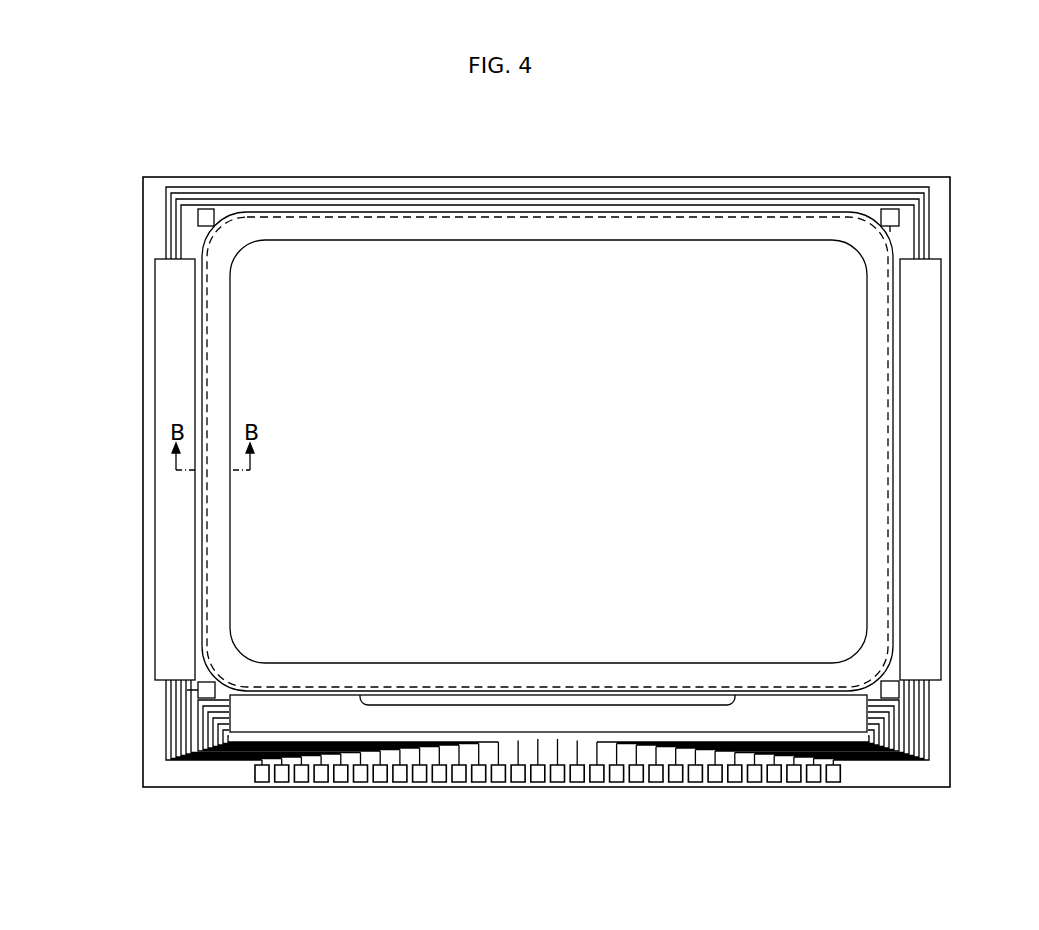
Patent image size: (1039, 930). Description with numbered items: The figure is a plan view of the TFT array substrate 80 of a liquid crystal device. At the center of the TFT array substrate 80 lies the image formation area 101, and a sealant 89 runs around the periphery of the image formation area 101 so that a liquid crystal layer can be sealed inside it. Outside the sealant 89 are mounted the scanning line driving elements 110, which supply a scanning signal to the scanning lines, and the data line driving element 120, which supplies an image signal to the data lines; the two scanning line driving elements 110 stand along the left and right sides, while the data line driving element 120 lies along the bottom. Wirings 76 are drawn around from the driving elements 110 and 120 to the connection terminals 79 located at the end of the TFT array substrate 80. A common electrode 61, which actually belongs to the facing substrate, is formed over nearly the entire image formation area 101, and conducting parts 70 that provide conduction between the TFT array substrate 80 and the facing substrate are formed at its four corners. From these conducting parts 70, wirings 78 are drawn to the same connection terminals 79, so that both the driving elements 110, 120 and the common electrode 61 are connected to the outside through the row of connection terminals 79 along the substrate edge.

The TFT array substrate 80 is at (203, 156).
The common electrode 61 is at (330, 213).
The conducting parts 70 is at (198, 217).
The sealant 89 is at (664, 228).
The scanning line driving elements 110 is at (172, 358).
The image formation area 101 is at (565, 461).
The wirings 76 is at (165, 741).
The wirings 78 is at (193, 746).
The data line driving element 120 is at (250, 712).
The connection terminals 79 is at (500, 773).